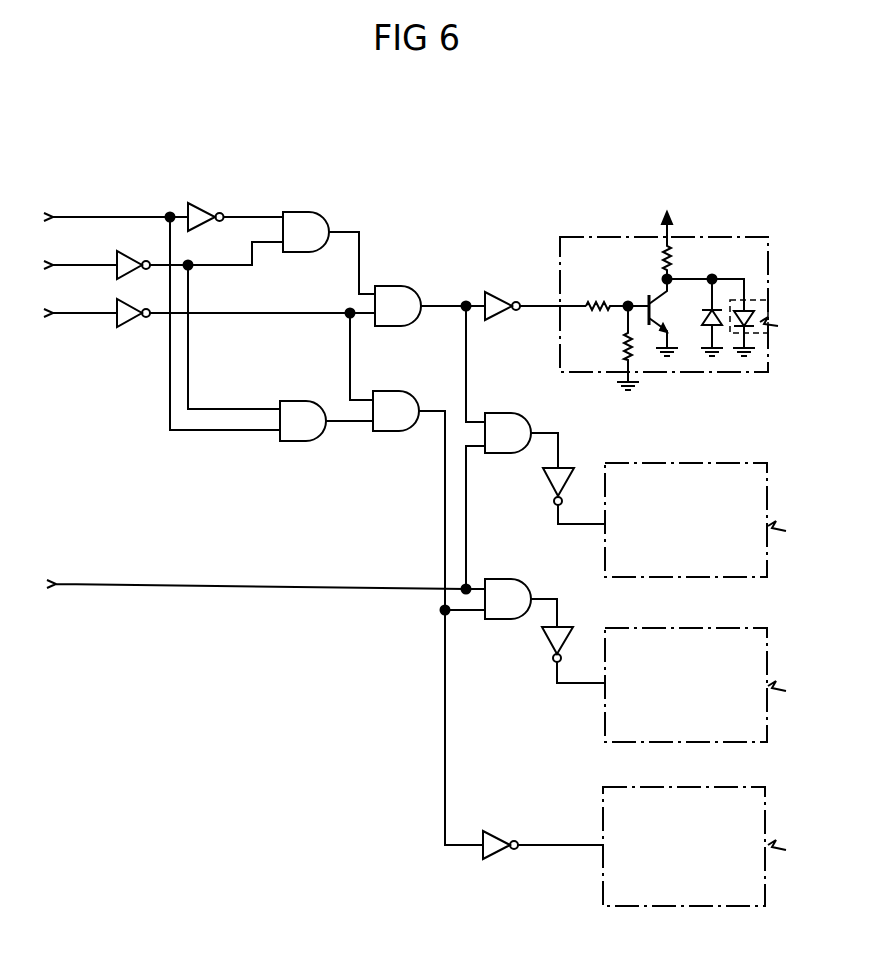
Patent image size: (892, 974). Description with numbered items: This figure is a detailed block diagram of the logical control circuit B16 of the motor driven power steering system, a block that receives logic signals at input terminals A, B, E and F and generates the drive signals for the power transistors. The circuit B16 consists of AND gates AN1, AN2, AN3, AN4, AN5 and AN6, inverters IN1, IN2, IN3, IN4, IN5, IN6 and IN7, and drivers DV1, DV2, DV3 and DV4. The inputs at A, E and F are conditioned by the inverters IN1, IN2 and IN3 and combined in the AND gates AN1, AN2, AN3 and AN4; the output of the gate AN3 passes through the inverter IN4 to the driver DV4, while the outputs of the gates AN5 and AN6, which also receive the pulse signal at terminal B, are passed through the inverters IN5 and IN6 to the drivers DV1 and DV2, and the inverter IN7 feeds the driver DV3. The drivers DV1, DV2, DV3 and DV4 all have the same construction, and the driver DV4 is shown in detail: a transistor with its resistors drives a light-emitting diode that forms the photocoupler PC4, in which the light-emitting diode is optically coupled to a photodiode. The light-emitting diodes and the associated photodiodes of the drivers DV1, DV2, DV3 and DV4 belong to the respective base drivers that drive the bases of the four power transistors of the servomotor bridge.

The logical control circuit B16 is at (503, 196).
The inverter IN1 is at (205, 203).
The inverter IN2 is at (118, 253).
The inverter IN3 is at (124, 328).
The inverter IN4 is at (497, 292).
The inverter IN5 is at (543, 481).
The inverter IN6 is at (546, 637).
The inverter IN7 is at (497, 830).
The AND gate AN1 is at (299, 210).
The AND gate AN2 is at (297, 399).
The AND gate AN3 is at (397, 282).
The AND gate AN4 is at (396, 390).
The AND gate AN5 is at (506, 412).
The AND gate AN6 is at (508, 578).
The driver DV1 is at (666, 462).
The driver DV2 is at (664, 628).
The driver DV3 is at (715, 786).
The driver DV4 is at (715, 235).
The photocoupler PC4 is at (769, 293).